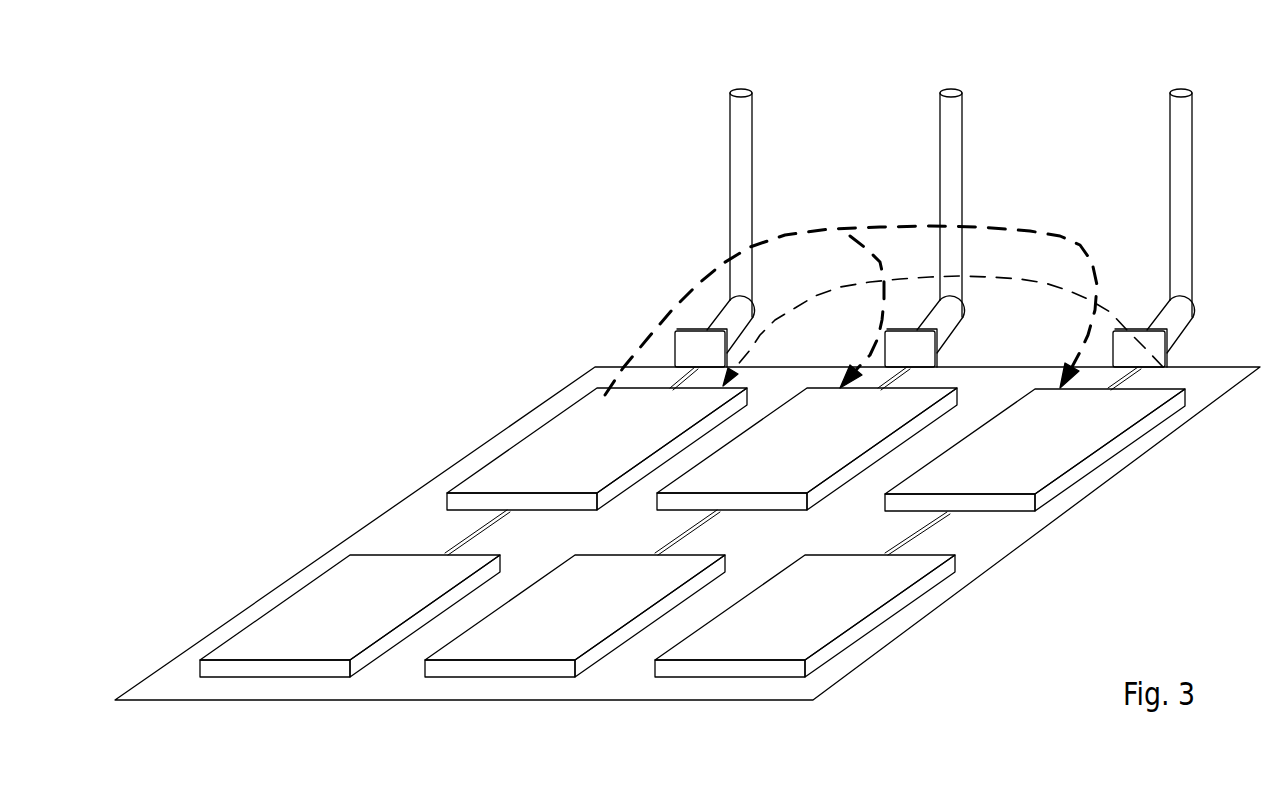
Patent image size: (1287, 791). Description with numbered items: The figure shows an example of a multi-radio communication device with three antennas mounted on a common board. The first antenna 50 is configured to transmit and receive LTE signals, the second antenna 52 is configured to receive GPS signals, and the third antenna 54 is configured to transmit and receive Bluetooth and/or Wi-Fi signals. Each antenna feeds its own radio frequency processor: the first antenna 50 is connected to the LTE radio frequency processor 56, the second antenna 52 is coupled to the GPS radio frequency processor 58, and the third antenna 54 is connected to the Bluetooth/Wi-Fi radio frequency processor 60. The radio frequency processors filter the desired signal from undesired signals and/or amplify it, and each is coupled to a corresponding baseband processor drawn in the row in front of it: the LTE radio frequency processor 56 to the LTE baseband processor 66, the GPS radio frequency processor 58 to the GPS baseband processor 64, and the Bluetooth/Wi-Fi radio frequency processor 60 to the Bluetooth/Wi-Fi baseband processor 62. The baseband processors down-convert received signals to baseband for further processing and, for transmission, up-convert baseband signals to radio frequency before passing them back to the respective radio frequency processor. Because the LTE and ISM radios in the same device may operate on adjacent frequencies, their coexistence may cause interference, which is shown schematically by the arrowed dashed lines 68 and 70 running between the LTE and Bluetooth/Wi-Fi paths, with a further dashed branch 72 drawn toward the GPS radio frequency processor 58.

The first antenna 50 is at (755, 103).
The second antenna 52 is at (965, 122).
The third antenna 54 is at (1194, 120).
The LTE radio frequency processor 56 is at (537, 493).
The GPS radio frequency processor 58 is at (742, 493).
The Bluetooth/Wi-Fi radio frequency processor 60 is at (988, 493).
The Bluetooth/Wi-Fi baseband processor 62 is at (900, 598).
The GPS baseband processor 64 is at (663, 598).
The LTE baseband processor 66 is at (433, 600).
The arrowed dashed line 68 is at (1050, 283).
The arrowed dashed line 70 is at (1090, 248).
The signal path branch to GPS RF 72 is at (880, 262).